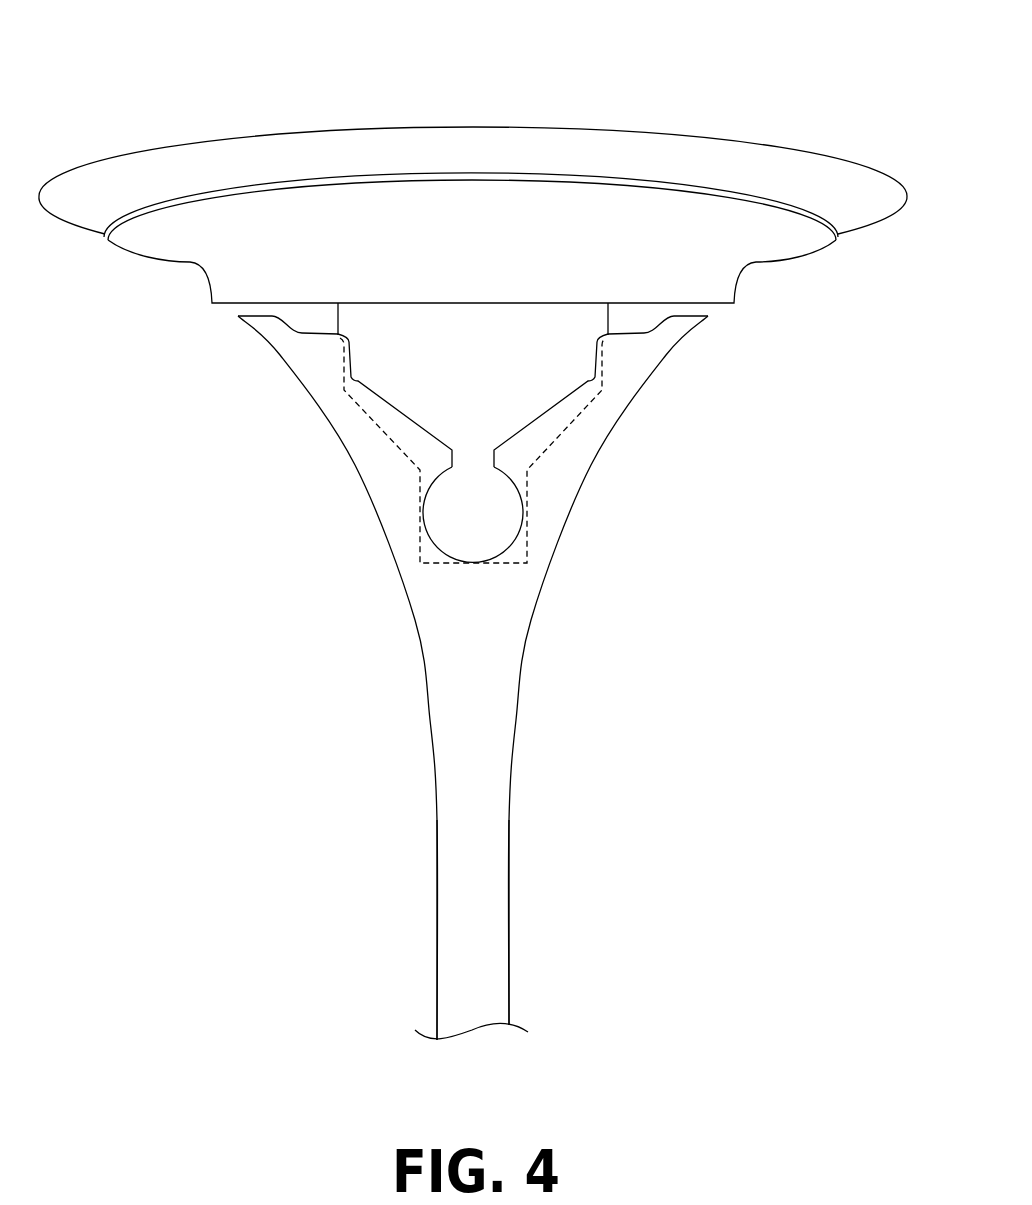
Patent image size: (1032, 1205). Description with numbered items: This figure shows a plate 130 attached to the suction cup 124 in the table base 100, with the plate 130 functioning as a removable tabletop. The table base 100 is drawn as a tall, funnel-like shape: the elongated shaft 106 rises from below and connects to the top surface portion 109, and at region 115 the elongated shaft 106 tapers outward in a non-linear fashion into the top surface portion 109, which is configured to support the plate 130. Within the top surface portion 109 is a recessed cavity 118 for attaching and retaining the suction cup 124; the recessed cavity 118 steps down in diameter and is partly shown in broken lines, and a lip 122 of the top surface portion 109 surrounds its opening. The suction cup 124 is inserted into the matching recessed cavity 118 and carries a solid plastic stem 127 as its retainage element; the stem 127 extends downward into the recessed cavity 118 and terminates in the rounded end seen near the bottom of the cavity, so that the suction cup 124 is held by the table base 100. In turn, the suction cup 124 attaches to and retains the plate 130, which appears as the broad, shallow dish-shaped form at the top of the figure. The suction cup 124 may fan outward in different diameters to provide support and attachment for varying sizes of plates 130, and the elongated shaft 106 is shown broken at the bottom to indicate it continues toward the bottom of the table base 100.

The table base 100 is at (272, 970).
The elongated shaft 106 is at (473, 913).
The top surface portion 109 is at (307, 360).
The region 115 is at (512, 594).
The recessed cavity 118 is at (400, 429).
The lip 122 is at (262, 323).
The suction cup 124 is at (563, 350).
The stem 127 is at (473, 518).
The plate 130 is at (248, 163).